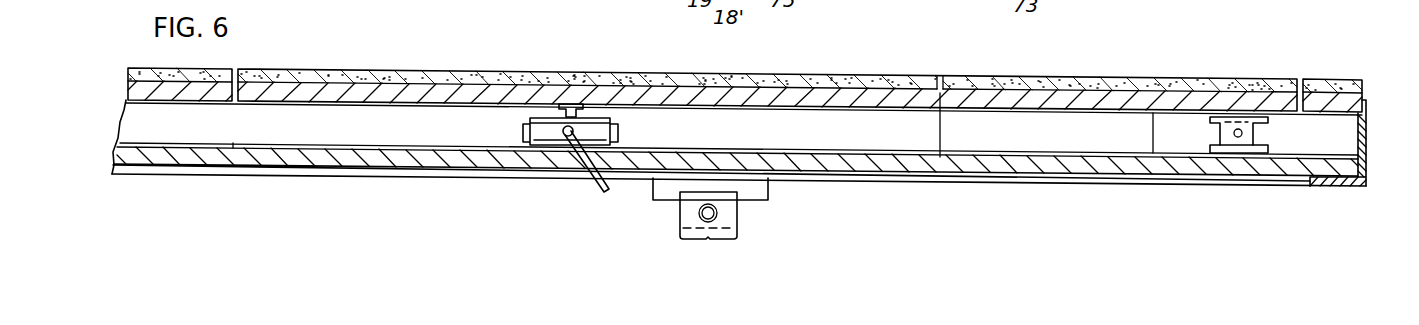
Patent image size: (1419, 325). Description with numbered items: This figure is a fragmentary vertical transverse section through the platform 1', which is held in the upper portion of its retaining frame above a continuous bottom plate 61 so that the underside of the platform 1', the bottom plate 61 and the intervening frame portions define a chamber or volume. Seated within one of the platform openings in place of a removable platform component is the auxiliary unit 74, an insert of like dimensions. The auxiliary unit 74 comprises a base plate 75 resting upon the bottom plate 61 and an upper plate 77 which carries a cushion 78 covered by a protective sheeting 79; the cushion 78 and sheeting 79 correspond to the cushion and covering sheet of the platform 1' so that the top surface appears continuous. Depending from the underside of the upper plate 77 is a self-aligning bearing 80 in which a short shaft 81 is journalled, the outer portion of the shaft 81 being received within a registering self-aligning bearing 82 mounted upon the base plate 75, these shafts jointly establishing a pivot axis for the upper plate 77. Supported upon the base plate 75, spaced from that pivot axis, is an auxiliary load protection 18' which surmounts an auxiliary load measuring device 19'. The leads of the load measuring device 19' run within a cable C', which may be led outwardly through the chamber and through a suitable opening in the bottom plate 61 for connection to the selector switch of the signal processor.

The platform 1' is at (218, 59).
The auxiliary unit 74 is at (913, 76).
The upper plate 77 is at (436, 96).
The cushion 78 is at (524, 82).
The protective sheeting 79 is at (621, 73).
The base plate 75 is at (729, 149).
The bottom plate 61 is at (861, 166).
The auxiliary load protection 18' is at (553, 162).
The auxiliary load measuring device 19' is at (545, 169).
The cable C' is at (586, 178).
The self-aligning bearing 80 is at (1236, 118).
The shaft 81 is at (1244, 134).
The self-aligning bearing 82 is at (1234, 148).